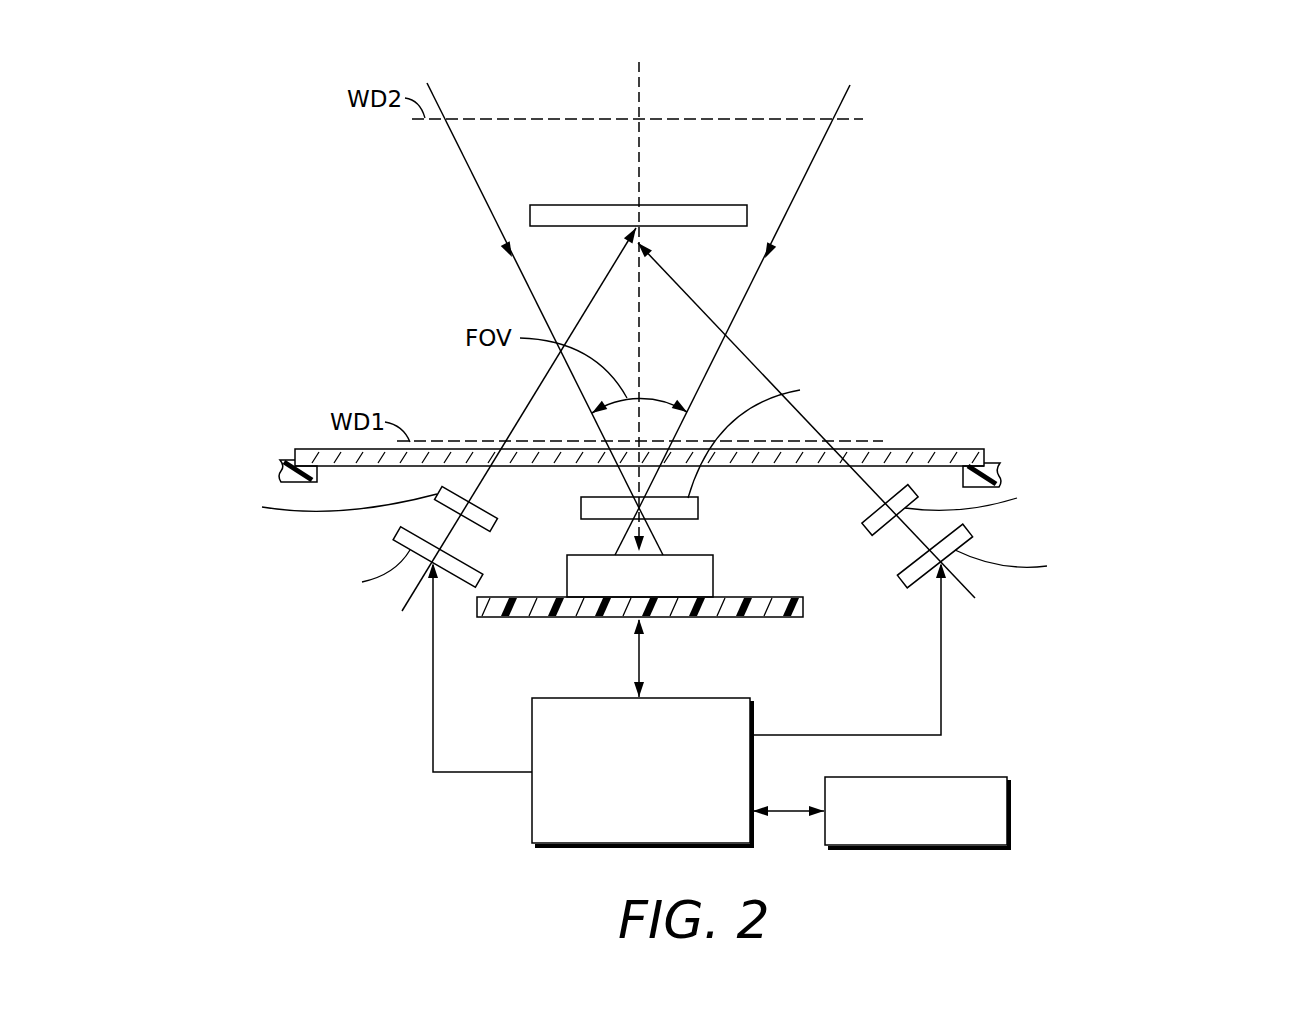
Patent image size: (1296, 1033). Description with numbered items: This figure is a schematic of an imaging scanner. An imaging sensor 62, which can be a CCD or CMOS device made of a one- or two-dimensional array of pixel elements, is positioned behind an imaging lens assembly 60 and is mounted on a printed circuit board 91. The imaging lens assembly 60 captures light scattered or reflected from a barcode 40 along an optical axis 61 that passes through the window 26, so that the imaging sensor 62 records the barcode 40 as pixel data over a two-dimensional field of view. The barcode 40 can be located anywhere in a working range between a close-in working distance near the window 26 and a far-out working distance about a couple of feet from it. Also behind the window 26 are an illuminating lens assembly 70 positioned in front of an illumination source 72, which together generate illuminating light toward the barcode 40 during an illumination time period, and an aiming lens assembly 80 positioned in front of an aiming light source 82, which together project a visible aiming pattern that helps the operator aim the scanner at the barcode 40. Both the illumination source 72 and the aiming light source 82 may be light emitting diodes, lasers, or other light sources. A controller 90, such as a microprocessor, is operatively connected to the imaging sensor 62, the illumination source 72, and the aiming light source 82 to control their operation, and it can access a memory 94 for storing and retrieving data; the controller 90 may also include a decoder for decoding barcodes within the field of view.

The window 26 is at (310, 447).
The barcode 40 is at (720, 205).
The imaging lens assembly 60 is at (698, 507).
The optical axis 61 is at (640, 90).
The imaging sensor 62 is at (713, 577).
The illuminating lens assembly 70 is at (1107, 455).
The illumination source 72 is at (1215, 565).
The aiming lens assembly 80 is at (176, 479).
The aiming light source 82 is at (275, 623).
The controller 90 is at (532, 728).
The printed circuit board 91 is at (735, 620).
The memory 94 is at (1010, 815).